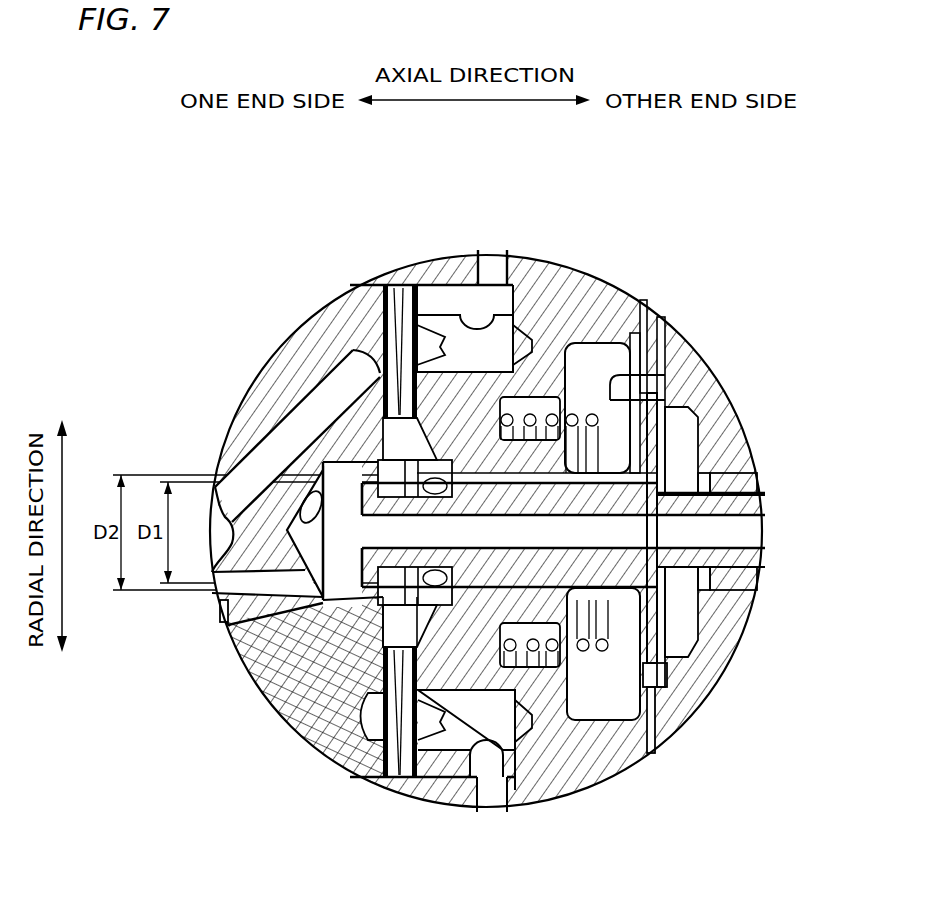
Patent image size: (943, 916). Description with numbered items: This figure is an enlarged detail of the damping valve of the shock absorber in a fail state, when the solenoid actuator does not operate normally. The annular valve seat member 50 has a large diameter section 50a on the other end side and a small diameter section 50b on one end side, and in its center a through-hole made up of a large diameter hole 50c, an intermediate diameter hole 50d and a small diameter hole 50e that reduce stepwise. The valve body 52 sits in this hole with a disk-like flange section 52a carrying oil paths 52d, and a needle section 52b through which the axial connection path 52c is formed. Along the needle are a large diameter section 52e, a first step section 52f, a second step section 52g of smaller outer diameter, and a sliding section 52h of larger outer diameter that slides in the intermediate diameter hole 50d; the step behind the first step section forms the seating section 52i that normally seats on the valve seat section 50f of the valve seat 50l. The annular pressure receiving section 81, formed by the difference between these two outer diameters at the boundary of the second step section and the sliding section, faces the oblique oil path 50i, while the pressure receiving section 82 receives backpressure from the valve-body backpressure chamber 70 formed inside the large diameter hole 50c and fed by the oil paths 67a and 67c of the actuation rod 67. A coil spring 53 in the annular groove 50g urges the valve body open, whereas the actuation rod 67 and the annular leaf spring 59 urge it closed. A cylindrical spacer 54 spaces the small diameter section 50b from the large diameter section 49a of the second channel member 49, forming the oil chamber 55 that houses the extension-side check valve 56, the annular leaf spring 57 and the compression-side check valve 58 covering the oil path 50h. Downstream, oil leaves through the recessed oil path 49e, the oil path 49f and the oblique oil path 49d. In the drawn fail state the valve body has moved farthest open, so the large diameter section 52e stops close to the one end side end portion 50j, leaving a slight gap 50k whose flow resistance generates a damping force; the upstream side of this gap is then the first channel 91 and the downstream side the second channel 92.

The second channel member 49 is at (282, 367).
The large diameter section 49a is at (262, 430).
The oil path 49d is at (257, 427).
The oil path 49e is at (258, 453).
The oil path 49f is at (240, 607).
The second channel 92 is at (300, 403).
The first channel 91 is at (290, 660).
The valve seat member 50 is at (612, 760).
The large diameter section 50a is at (625, 745).
The small diameter section 50b is at (447, 800).
The large diameter hole 50c is at (593, 710).
The intermediate diameter hole 50d is at (462, 790).
The small diameter hole 50e is at (230, 617).
The valve seat section 50f is at (272, 690).
The annular groove 50g is at (540, 700).
The oil path 50h is at (485, 808).
The oil path 50i is at (347, 727).
The one end side end portion 50j is at (280, 650).
The gap 50k is at (268, 635).
The valve seat 50l is at (322, 690).
The valve body 52 is at (630, 303).
The flange section 52a is at (587, 383).
The needle section 52b is at (557, 478).
The connection path 52c is at (343, 488).
The oil paths 52d is at (623, 443).
The large diameter section 52e is at (308, 498).
The first step section 52f is at (393, 388).
The second step section 52g is at (458, 345).
The sliding section 52h is at (503, 330).
The seating section 52i is at (403, 410).
The coil spring 53 is at (643, 747).
The cylindrical spacer 54 is at (470, 795).
The oil chamber 55 is at (386, 780).
The extension-side check valve 56 is at (377, 760).
The annular leaf spring 57 is at (398, 780).
The compression-side check valve 58 is at (413, 780).
The annular leaf spring 59 is at (673, 673).
The actuation rod 67 is at (760, 503).
The oil path 67a is at (753, 532).
The oil path 67c is at (680, 567).
The valve-body backpressure chamber 70 is at (655, 720).
The pressure receiving section 81 is at (487, 255).
The pressure receiving section 82 is at (613, 470).